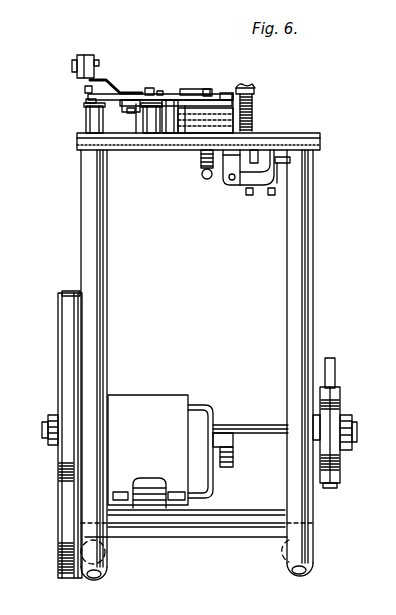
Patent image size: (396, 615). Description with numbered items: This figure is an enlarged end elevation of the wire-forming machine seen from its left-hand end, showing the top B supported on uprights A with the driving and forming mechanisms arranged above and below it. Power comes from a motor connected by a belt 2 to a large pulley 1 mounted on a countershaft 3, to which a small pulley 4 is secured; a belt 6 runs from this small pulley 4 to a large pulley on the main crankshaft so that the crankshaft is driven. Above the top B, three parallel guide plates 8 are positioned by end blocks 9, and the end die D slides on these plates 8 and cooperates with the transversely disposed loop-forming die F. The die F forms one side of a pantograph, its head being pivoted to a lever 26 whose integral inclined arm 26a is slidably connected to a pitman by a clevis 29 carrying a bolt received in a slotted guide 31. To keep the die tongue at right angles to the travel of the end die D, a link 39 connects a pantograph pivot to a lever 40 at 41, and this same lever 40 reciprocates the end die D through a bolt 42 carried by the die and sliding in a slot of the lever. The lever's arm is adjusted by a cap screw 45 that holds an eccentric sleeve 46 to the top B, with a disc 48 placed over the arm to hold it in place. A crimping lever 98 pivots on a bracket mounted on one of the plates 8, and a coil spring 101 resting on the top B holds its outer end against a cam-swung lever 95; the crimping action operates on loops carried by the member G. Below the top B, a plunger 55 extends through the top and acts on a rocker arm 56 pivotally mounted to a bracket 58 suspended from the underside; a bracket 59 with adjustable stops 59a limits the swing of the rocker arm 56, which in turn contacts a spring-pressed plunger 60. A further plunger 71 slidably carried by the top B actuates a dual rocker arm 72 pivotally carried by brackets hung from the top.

The top B is at (322, 141).
The upright column A is at (108, 263).
The end die D is at (205, 106).
The end blocks 9 is at (190, 112).
The loop-forming die F is at (136, 104).
The eccentric sleeve 46 is at (84, 110).
The disc 48 is at (90, 100).
The cap screw 45 is at (88, 88).
The lever 26 is at (127, 104).
The guide plates 8 is at (169, 116).
The lever 40 is at (170, 108).
The link 39 is at (160, 92).
The connection point 41 is at (150, 88).
The bolt 42 is at (208, 90).
The crimping lever 98 is at (228, 88).
The lever 95 is at (254, 90).
The coil spring 101 is at (253, 110).
The plunger 71 is at (260, 150).
The plunger 55 is at (278, 157).
The slotted guide 31 is at (86, 56).
The clevis 29 is at (97, 64).
The inclined arm 26a is at (112, 86).
The spring-pressed plunger 60 is at (203, 170).
The dual rocker arm 72 is at (215, 186).
The rocker arm 56 is at (212, 173).
The bracket 58 is at (226, 182).
The bracket 59 is at (249, 194).
The adjustable stops 59a is at (272, 195).
The member G is at (152, 398).
The countershaft 3 is at (247, 434).
The large pulley 1 is at (60, 321).
The belt 2 is at (70, 295).
The belt 6 is at (331, 358).
The small pulley 4 is at (339, 400).